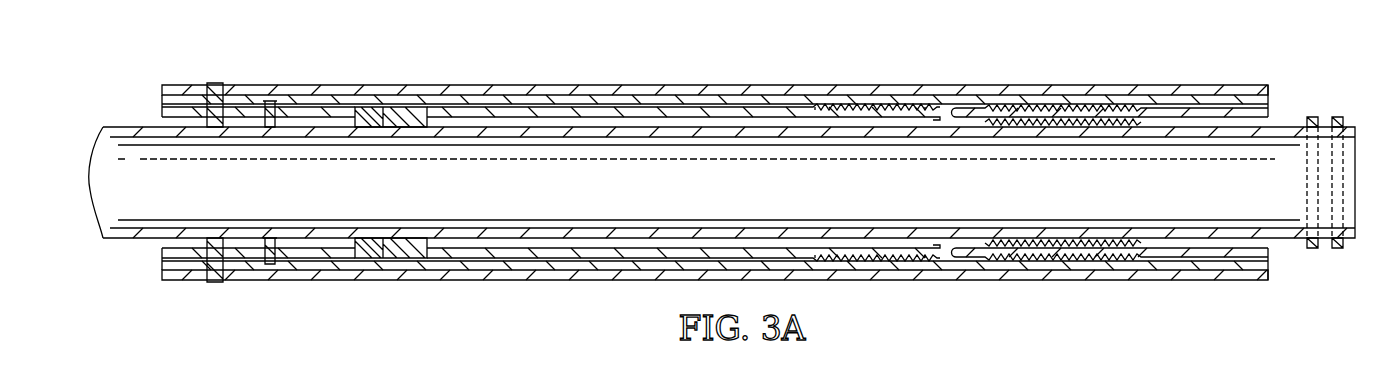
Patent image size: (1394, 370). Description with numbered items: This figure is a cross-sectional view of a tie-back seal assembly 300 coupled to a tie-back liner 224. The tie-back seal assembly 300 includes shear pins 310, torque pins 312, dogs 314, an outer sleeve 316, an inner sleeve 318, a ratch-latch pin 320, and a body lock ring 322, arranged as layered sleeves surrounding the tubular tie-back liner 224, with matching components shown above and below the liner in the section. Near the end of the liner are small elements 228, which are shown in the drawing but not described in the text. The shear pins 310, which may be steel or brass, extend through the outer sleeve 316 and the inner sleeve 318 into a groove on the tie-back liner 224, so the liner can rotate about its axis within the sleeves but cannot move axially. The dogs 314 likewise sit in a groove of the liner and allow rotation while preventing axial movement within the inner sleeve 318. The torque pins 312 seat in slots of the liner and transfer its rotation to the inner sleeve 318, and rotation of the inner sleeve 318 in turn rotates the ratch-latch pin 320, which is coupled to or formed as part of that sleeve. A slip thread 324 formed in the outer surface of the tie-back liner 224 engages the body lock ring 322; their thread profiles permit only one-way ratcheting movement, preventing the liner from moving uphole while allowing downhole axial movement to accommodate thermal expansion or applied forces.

The tie-back seal assembly 300 is at (559, 76).
The tie-back liner 224 is at (145, 240).
The fasteners 228 is at (1310, 117).
The shear pins 310 is at (213, 83).
The torque pins 312 is at (268, 101).
The dogs 314 is at (392, 107).
The outer sleeve 316 is at (480, 97).
The inner sleeve 318 is at (693, 109).
The ratch-latch pin 320 is at (906, 107).
The body lock ring 322 is at (1192, 88).
The slip thread 324 is at (1090, 110).